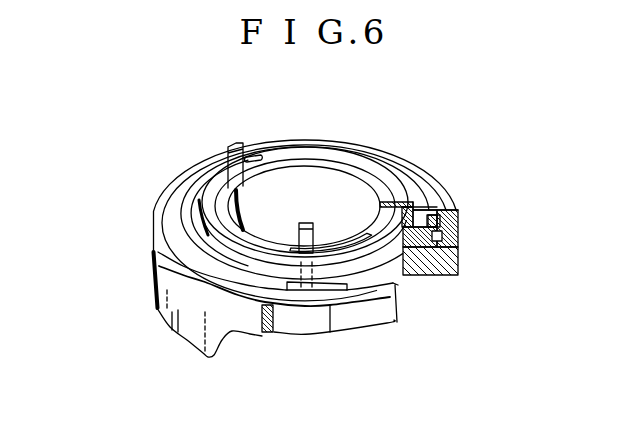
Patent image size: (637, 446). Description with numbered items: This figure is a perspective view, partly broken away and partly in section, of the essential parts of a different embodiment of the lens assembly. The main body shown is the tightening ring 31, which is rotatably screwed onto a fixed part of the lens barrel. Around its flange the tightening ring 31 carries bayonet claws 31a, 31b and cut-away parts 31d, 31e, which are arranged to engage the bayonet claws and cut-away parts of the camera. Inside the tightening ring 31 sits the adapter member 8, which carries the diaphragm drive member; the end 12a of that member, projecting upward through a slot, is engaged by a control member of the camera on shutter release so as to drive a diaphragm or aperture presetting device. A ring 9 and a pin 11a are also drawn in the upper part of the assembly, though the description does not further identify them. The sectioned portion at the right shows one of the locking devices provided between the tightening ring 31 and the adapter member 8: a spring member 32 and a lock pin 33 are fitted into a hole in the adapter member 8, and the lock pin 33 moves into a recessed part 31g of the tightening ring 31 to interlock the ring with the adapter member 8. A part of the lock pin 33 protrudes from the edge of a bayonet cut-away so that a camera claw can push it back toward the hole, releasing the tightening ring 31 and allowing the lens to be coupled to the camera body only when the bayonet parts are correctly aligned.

The adapter member 8 is at (404, 234).
The ring 9 is at (369, 160).
The pin 11a is at (240, 146).
The end of the diaphragm drive member 12a is at (307, 223).
The tightening ring 31 is at (427, 190).
The bayonet claw 31a is at (268, 333).
The bayonet claw 31b is at (398, 315).
The cut-away part 31d is at (160, 258).
The cut-away part 31e is at (330, 320).
The recessed part 31g is at (436, 277).
The spring member 32 is at (445, 238).
The lock pin 33 is at (441, 214).